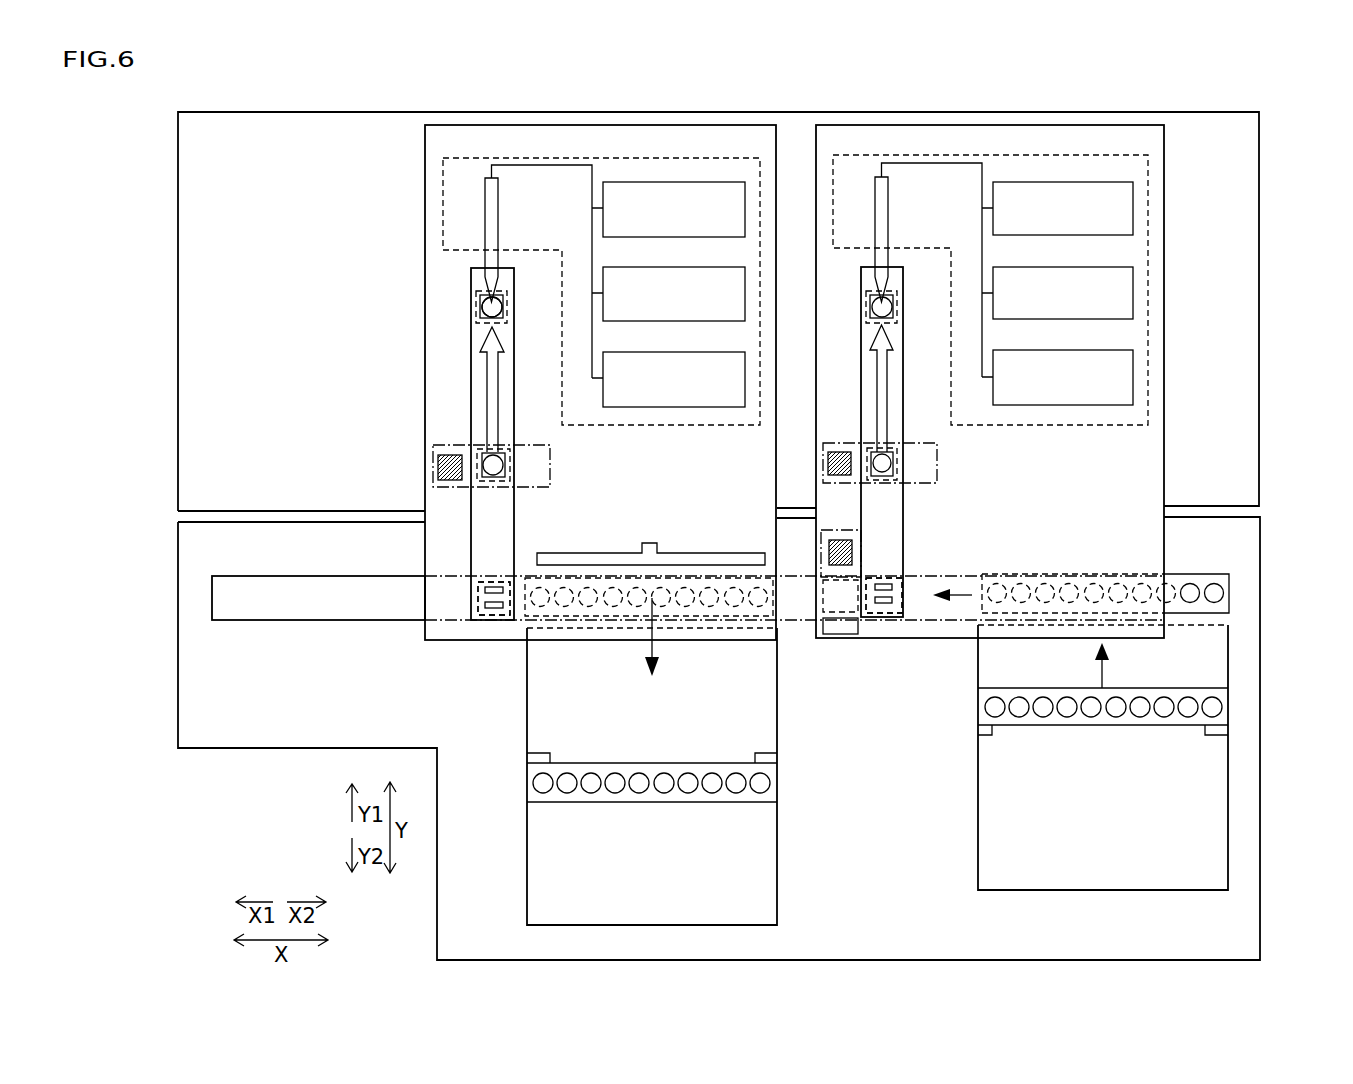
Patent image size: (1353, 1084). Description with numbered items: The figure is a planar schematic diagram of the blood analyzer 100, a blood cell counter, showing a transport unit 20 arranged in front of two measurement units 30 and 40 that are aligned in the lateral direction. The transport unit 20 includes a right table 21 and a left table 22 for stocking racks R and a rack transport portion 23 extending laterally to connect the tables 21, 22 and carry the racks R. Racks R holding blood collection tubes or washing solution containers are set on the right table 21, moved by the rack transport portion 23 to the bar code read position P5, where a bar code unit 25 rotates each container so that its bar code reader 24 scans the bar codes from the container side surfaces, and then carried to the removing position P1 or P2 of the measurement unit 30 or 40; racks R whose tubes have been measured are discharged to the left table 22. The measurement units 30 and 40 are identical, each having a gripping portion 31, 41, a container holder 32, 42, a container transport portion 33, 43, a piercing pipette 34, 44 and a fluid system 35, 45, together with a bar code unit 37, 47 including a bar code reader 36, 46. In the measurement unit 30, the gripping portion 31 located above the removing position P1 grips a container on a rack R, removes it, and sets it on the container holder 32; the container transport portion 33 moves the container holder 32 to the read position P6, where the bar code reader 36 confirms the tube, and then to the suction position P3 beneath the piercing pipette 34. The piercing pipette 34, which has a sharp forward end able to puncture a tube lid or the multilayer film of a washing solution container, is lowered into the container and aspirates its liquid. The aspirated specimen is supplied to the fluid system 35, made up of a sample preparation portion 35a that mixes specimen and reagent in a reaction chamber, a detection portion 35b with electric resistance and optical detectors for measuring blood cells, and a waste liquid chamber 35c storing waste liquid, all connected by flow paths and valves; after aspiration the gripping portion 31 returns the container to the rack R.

The blood analyzer 100 is at (1268, 103).
The transport unit 20 is at (1272, 527).
The right table 21 is at (1207, 670).
The left table 22 is at (548, 722).
The rack transport portion 23 is at (952, 622).
The bar code reader 24 is at (829, 553).
The bar code unit 25 is at (845, 634).
The measurement unit 30 is at (783, 140).
The gripping portion 31 is at (495, 583).
The container holder 32 is at (503, 316).
The container transport portion 33 is at (514, 503).
The piercing pipette 34 is at (492, 212).
The fluid system 35 is at (665, 427).
The sample preparation portion 35a is at (637, 189).
The detection portion 35b is at (637, 274).
The waste liquid chamber 35c is at (637, 358).
The bar code reader 36 is at (438, 458).
The bar code unit 37 is at (448, 447).
The measurement unit 40 is at (1171, 138).
The gripping portion 41 is at (885, 583).
The container holder 42 is at (893, 316).
The container transport portion 43 is at (903, 503).
The piercing pipette 44 is at (883, 212).
The fluid system 45 is at (1053, 427).
The bar code reader 46 is at (828, 458).
The bar code unit 47 is at (838, 444).
The removing position P1 is at (478, 598).
The removing position P2 is at (882, 614).
The suction position P3 is at (478, 307).
The bar code read position P5 is at (833, 616).
The read position P6 is at (508, 465).
The rack R is at (656, 801).